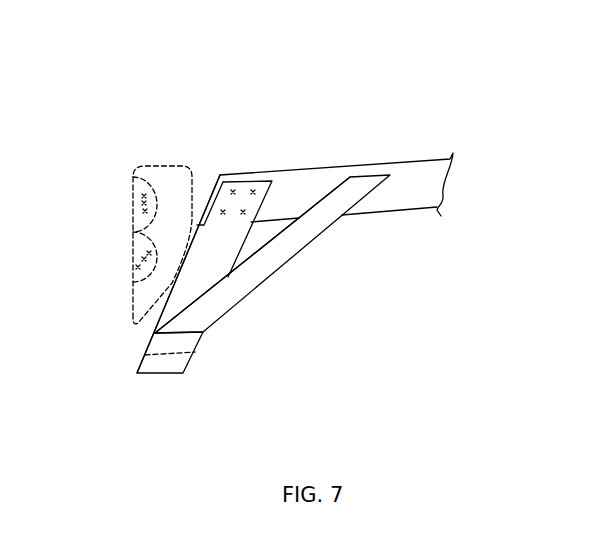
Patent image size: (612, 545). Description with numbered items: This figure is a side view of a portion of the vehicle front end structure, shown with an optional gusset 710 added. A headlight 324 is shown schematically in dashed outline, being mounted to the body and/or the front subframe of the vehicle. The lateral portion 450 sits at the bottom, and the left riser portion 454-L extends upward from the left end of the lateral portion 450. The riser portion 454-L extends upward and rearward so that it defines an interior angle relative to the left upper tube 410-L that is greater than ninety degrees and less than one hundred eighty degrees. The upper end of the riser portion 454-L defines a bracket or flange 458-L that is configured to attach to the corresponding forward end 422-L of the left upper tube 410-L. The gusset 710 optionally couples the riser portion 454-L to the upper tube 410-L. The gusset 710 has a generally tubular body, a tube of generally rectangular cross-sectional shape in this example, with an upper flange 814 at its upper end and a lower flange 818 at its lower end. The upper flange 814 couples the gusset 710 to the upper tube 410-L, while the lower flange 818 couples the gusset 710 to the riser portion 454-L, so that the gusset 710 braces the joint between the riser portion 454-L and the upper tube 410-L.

The headlight 324 is at (133, 198).
The lateral portion 450 is at (147, 361).
The left riser portion 454-L is at (163, 280).
The forward end of left upper tube 422-L is at (217, 185).
The bracket or flange 458-L is at (243, 186).
The left upper tube 410-L is at (427, 158).
The gusset 710 is at (305, 245).
The upper flange 814 is at (333, 177).
The lower flange 818 is at (220, 334).